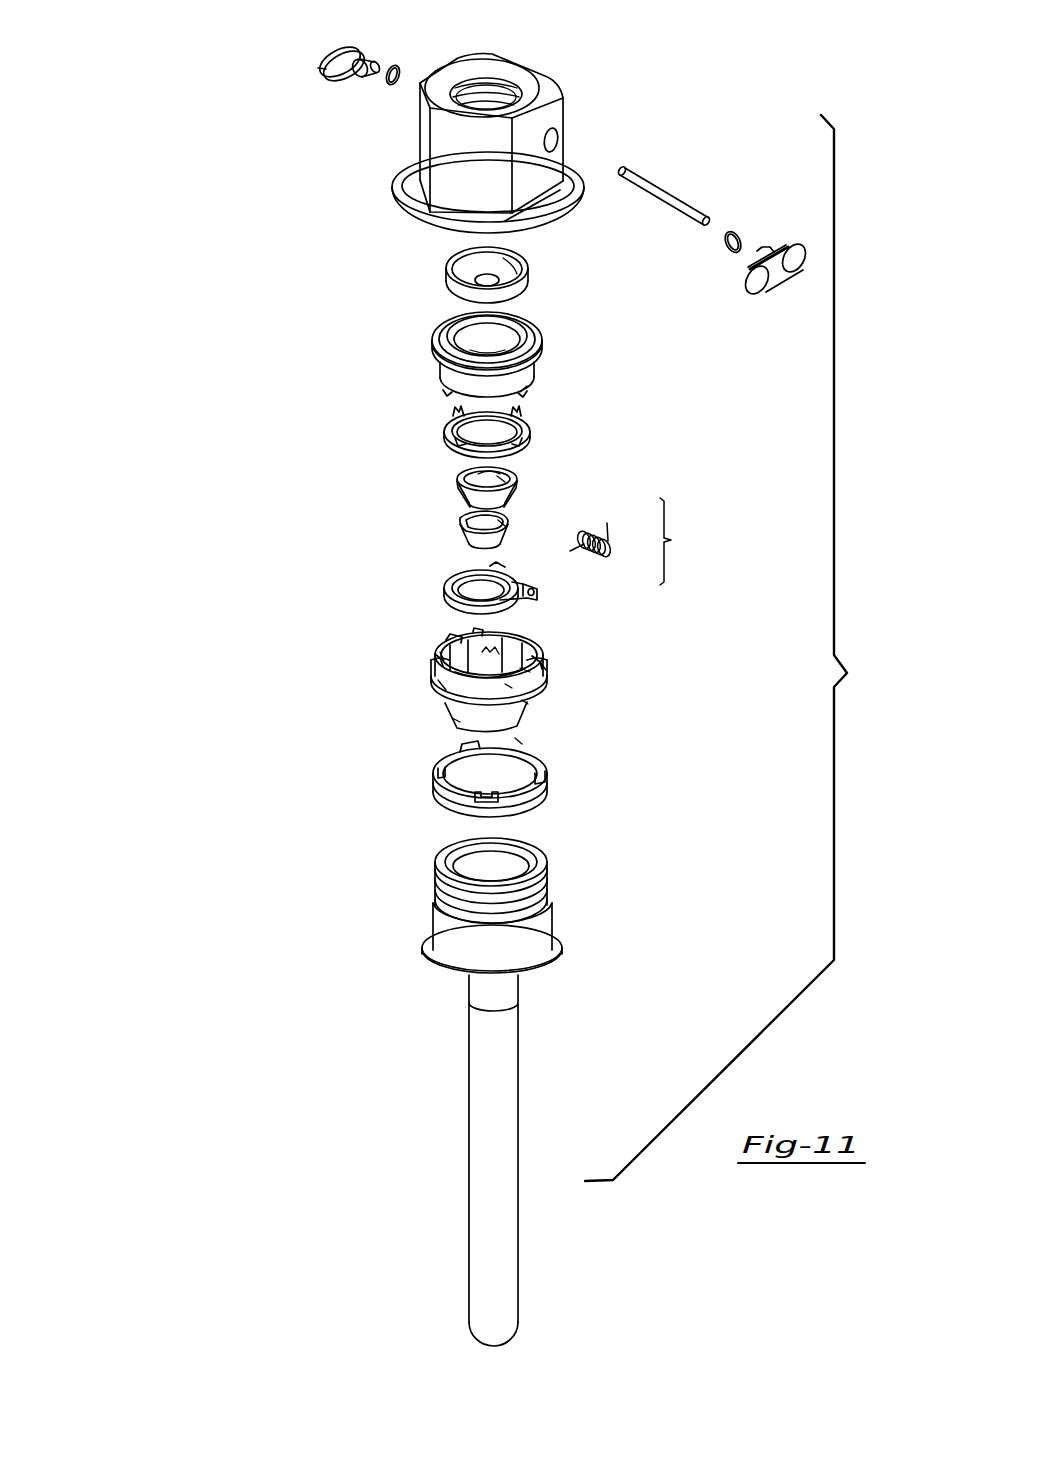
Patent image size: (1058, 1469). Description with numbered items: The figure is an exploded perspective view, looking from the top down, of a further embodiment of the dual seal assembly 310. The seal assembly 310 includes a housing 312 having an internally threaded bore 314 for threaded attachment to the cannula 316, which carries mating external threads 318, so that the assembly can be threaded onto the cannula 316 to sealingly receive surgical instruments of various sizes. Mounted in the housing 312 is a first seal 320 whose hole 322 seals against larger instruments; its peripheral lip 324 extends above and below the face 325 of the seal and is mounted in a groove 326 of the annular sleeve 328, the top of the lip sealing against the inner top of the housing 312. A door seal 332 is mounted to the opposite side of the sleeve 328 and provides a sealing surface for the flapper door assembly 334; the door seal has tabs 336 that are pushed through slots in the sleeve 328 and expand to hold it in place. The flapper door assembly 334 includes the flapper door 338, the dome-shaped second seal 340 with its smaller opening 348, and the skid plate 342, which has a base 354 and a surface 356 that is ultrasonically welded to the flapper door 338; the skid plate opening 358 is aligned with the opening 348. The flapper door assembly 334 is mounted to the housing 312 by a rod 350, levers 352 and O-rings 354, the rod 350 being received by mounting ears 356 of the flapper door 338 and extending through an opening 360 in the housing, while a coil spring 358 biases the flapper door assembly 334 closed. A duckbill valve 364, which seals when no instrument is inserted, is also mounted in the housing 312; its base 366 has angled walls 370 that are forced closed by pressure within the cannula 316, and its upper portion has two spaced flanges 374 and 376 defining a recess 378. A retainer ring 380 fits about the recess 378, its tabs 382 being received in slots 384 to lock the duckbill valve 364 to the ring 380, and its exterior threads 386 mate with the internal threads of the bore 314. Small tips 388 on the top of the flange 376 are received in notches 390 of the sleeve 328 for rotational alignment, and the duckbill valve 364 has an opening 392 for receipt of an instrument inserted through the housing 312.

The seal assembly 310 is at (268, 546).
The housing 312 is at (429, 117).
The internally threaded bore 314 is at (494, 90).
The cannula 316 is at (390, 1073).
The external threads 318 is at (547, 887).
The first seal 320 is at (477, 269).
The hole 322 is at (487, 276).
The peripheral lip 324 is at (520, 290).
The face 325 is at (515, 272).
The groove 326 is at (528, 338).
The annular sleeve 328 is at (466, 357).
The door seal 332 is at (492, 428).
The flapper door assembly 334 is at (445, 592).
The tabs 336 is at (453, 412).
The flapper door 338 is at (463, 580).
The second seal 340 is at (471, 522).
The skid plate 342 is at (506, 512).
The opening 348 is at (508, 520).
The rod 350 is at (676, 207).
The levers 352 is at (330, 68).
The O-rings 354 is at (392, 84).
The mounting ears 356 is at (473, 484).
The coil spring 358 is at (505, 480).
The opening 360 is at (560, 134).
The duckbill valve 364 is at (418, 680).
The base 366 is at (455, 720).
The angled walls 370 is at (520, 742).
The flange 374 is at (525, 702).
The flange 376 is at (525, 670).
The recess 378 is at (440, 682).
The retainer ring 380 is at (422, 791).
The tabs 382 is at (547, 785).
The slots 384 is at (545, 668).
The threads 386 is at (445, 798).
The small tips 388 is at (510, 686).
The notches 390 is at (528, 392).
The opening 392 is at (492, 644).